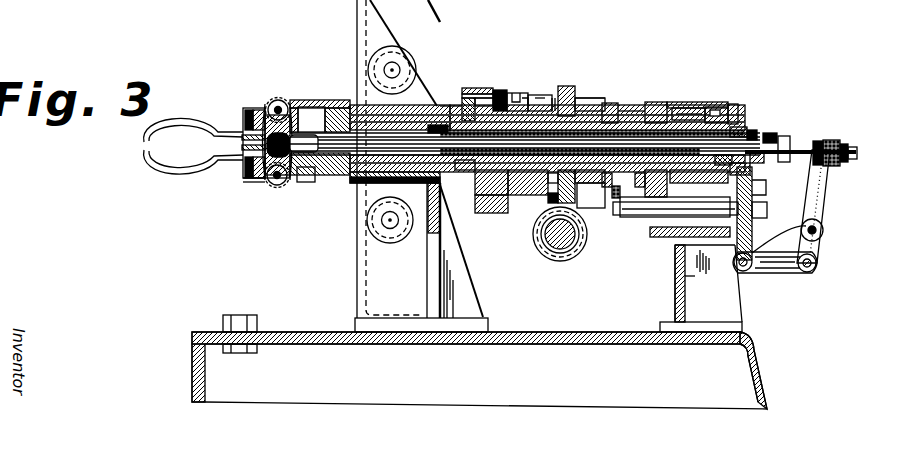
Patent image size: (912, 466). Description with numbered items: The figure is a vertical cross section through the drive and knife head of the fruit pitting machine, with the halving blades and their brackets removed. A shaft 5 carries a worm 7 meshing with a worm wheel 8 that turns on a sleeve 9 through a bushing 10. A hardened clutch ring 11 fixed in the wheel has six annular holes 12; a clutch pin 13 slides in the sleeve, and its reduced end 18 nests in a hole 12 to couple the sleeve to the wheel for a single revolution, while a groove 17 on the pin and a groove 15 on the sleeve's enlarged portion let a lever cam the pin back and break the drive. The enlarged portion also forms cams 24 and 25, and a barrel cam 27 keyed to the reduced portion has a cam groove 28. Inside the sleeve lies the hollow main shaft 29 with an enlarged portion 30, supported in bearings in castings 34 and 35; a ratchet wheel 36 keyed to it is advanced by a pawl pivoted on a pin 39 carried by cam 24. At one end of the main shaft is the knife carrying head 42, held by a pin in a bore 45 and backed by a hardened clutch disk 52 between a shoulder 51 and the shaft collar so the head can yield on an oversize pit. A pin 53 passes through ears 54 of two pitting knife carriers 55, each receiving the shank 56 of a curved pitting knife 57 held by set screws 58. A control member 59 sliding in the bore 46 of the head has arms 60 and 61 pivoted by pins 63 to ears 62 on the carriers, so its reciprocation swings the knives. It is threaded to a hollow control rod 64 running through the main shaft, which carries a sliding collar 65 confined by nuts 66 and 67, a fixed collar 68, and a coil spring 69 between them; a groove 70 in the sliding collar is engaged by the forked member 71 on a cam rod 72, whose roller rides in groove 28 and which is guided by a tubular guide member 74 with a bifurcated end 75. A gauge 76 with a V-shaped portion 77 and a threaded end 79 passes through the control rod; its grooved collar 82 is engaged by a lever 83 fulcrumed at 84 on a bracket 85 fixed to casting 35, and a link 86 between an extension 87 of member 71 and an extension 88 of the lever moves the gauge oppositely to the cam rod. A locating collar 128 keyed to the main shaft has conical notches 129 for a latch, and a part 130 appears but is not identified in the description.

The shaft 5 is at (580, 252).
The worm 7 is at (545, 260).
The worm wheel 8 is at (582, 100).
The sleeve 9 is at (632, 110).
The bushing 10 is at (582, 108).
The clutch ring 11 is at (545, 234).
The holes 12 is at (519, 196).
The clutch pin 13 is at (512, 94).
The groove 15 is at (548, 96).
The groove 17 is at (530, 94).
The reduced end 18 is at (566, 86).
The cam 24 is at (505, 90).
The cam 25 is at (494, 216).
The barrel cam 27 is at (612, 103).
The cam groove 28 is at (650, 102).
The hollow main shaft 29 is at (448, 104).
The enlarged portion 30 is at (405, 232).
The casting 34 is at (378, 288).
The casting 35 is at (722, 292).
The ratchet wheel 36 is at (444, 192).
The pin 39 is at (474, 88).
The knife carrying head 42 is at (332, 102).
The bore 45 is at (378, 66).
The bore 46 is at (310, 230).
The shoulder 51 is at (336, 178).
The clutch disk 52 is at (345, 105).
The pin 53 is at (248, 186).
The ears 54 is at (330, 110).
The pitting knife carriers 55 is at (240, 114).
The shank 56 is at (240, 166).
The curved pitting knife 57 is at (152, 160).
The set screws 58 is at (270, 102).
The control member 59 is at (306, 175).
The arm 60 is at (294, 112).
The arm 61 is at (292, 178).
The ears 62 is at (273, 185).
The pin 63 is at (288, 104).
The hollow control rod 64 is at (512, 216).
The sliding collar 65 is at (740, 127).
The nut 66 is at (752, 166).
The nut 67 is at (765, 158).
The collar 68 is at (596, 186).
The coil spring 69 is at (722, 100).
The groove 70 is at (788, 136).
The member 71 is at (753, 196).
The cam rod 72 is at (660, 222).
The tubular guide member 74 is at (638, 226).
The bifurcated guide end 75 is at (612, 218).
The gauge 76 is at (480, 198).
The V-shaped portion 77 is at (307, 119).
The threaded end 79 is at (783, 134).
The grooved collar 82 is at (832, 140).
The lever 83 is at (826, 188).
The fulcrum 84 is at (824, 230).
The bracket 85 is at (695, 278).
The link 86 is at (772, 272).
The extension 87 is at (735, 256).
The extension 88 is at (818, 256).
The locating collar 128 is at (670, 100).
The conical notches 129 is at (688, 106).
The plate 130 is at (718, 100).